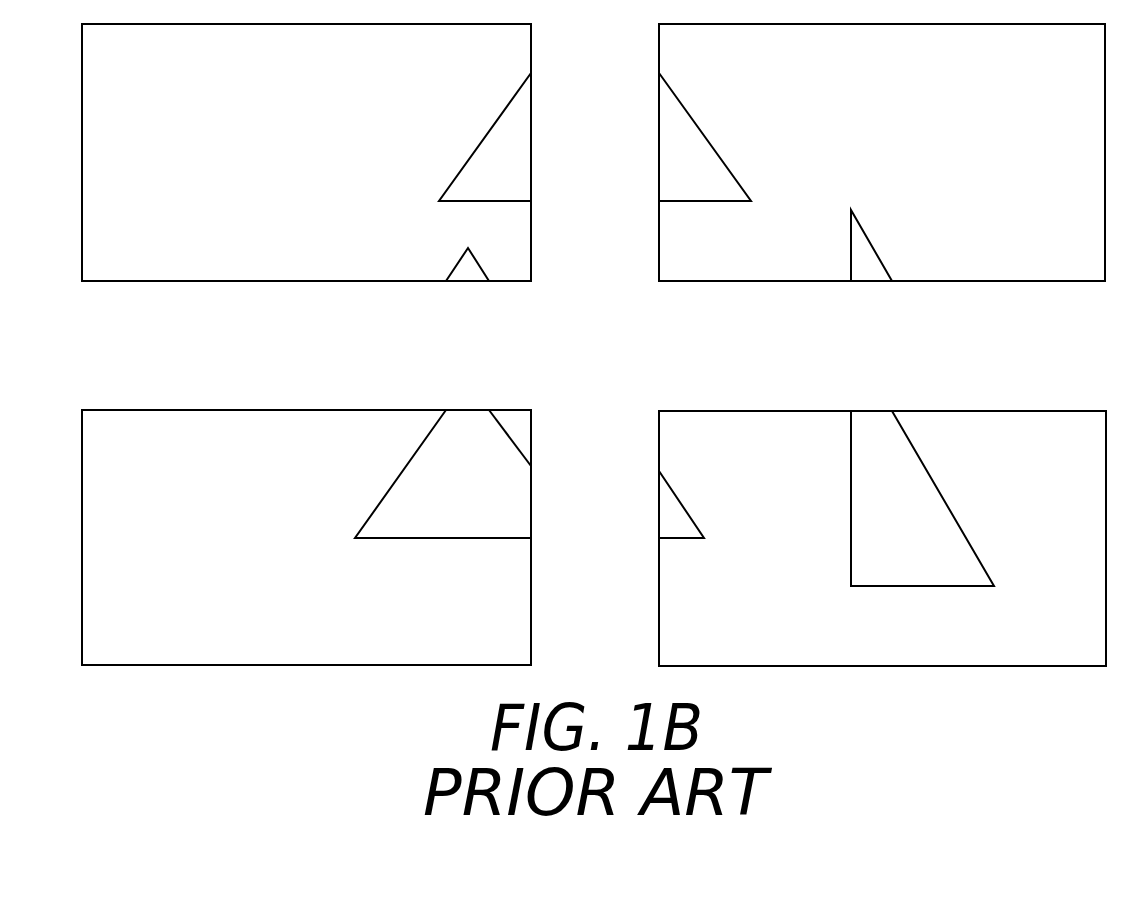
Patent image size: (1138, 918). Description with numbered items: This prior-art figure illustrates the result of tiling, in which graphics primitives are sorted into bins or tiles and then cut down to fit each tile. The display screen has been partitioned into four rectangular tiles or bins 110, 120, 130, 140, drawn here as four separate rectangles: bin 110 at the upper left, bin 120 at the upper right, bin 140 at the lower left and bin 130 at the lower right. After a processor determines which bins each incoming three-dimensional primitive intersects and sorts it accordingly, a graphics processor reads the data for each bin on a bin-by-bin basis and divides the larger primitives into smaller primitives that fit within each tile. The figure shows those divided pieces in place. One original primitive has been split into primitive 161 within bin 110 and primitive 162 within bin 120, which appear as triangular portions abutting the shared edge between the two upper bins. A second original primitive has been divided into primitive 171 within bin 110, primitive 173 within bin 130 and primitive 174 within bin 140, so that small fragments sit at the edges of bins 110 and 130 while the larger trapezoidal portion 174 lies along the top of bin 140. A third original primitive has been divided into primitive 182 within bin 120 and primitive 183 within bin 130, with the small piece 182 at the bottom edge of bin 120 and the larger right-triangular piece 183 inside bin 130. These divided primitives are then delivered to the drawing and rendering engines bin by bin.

The rectangular tile (bin) 110 is at (306, 152).
The rectangular tile (bin) 120 is at (882, 152).
The rectangular tile (bin) 130 is at (882, 538).
The rectangular tile (bin) 140 is at (306, 537).
The primitive 161 is at (485, 137).
The primitive 162 is at (705, 137).
The primitive 171 is at (450, 275).
The primitive 173 is at (684, 504).
The primitive 174 is at (443, 474).
The primitive 182 is at (879, 253).
The primitive 183 is at (922, 498).